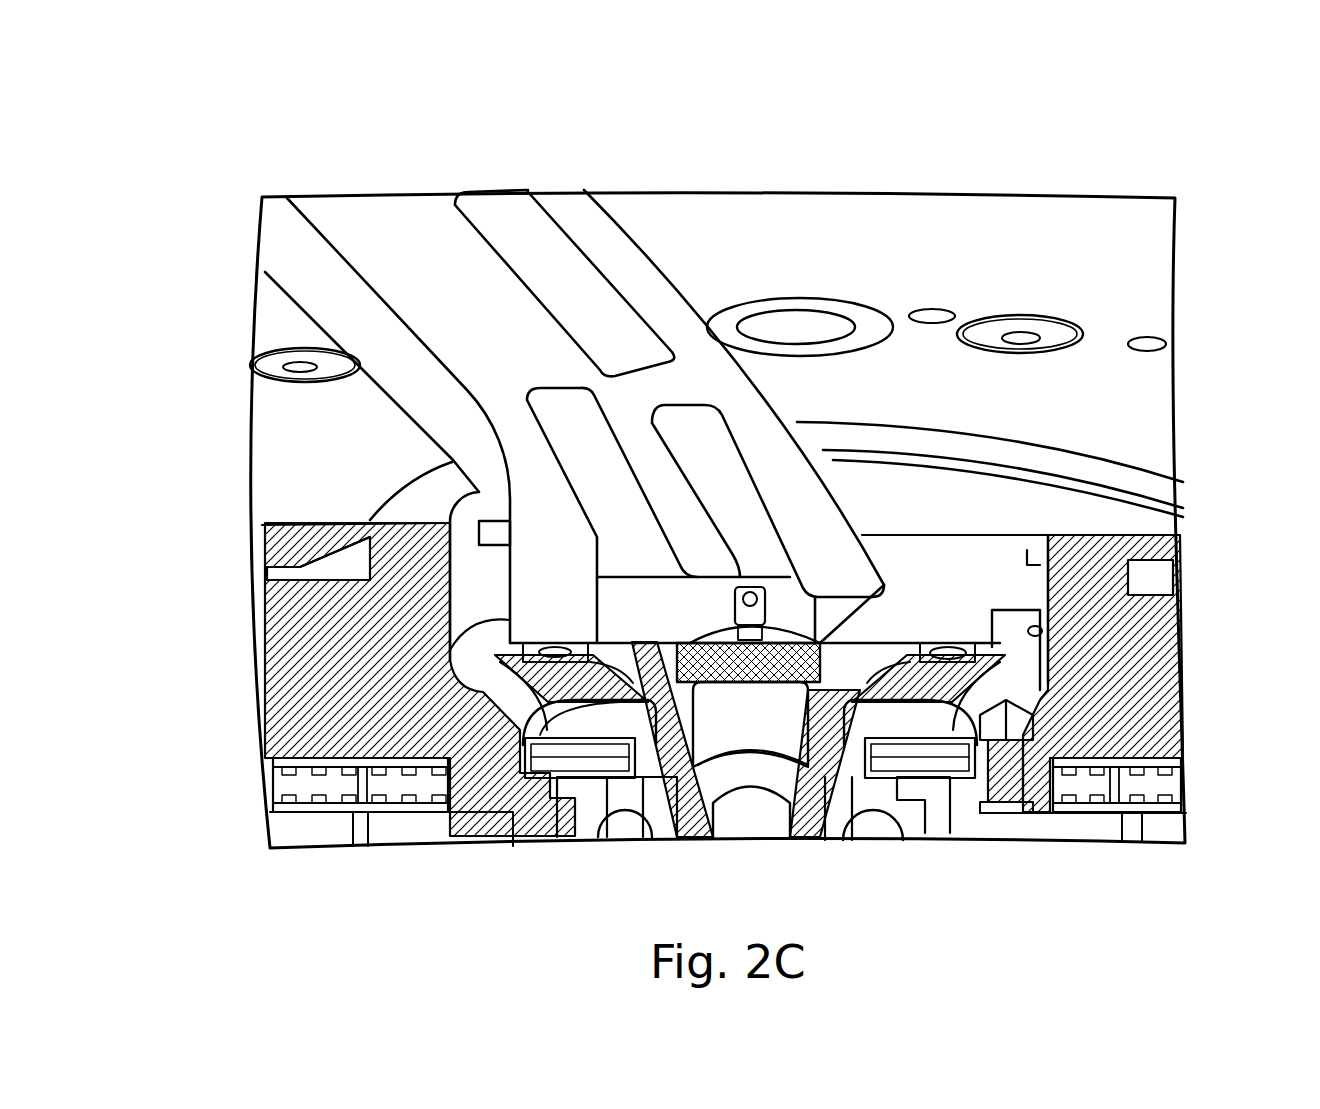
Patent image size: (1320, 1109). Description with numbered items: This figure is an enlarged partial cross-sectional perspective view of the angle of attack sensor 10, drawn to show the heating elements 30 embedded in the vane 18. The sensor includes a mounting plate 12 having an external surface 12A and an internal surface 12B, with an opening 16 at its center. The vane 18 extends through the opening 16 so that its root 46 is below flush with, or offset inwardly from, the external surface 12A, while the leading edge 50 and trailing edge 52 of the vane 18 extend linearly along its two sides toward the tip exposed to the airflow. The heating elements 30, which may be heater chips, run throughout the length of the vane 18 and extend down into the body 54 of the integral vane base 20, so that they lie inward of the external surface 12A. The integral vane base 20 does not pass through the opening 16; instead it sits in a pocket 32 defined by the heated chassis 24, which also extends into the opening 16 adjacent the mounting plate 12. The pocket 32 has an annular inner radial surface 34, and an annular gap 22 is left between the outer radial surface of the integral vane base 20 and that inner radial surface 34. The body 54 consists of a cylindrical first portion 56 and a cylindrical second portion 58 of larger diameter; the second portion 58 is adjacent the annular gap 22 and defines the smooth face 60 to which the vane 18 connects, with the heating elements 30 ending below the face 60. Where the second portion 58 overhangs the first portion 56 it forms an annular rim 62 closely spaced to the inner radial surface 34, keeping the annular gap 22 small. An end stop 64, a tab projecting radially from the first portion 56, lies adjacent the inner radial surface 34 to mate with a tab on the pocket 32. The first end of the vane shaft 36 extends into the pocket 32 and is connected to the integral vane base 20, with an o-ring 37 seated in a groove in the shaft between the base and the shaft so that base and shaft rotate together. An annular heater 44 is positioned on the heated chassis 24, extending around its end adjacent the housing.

The angle of attack sensor 10 is at (186, 143).
The mounting plate 12 is at (292, 460).
The external surface 12A is at (310, 492).
The internal surface 12B is at (300, 565).
The opening 16 is at (405, 498).
The vane 18 is at (590, 216).
The integral vane base 20 is at (838, 392).
The annular gap 22 is at (300, 370).
The heated chassis 24 is at (1058, 497).
The heating elements 30 is at (515, 210).
The pocket 32 is at (466, 584).
The inner radial surface 34 is at (1042, 618).
The vane shaft 36 is at (802, 820).
The o-ring 37 is at (513, 653).
The heater 44 is at (295, 779).
The root 46 is at (873, 540).
The leading edge 50 is at (658, 265).
The trailing edge 52 is at (268, 266).
The body 54 is at (988, 577).
The first portion 56 is at (1030, 572).
The second portion 58 is at (1025, 503).
The face 60 is at (952, 508).
The rim 62 is at (490, 528).
The end stop 64 is at (1033, 549).